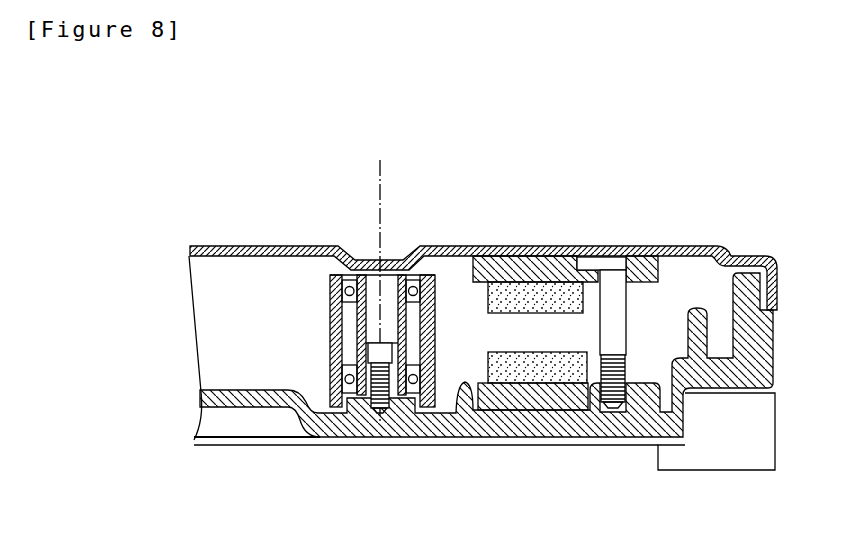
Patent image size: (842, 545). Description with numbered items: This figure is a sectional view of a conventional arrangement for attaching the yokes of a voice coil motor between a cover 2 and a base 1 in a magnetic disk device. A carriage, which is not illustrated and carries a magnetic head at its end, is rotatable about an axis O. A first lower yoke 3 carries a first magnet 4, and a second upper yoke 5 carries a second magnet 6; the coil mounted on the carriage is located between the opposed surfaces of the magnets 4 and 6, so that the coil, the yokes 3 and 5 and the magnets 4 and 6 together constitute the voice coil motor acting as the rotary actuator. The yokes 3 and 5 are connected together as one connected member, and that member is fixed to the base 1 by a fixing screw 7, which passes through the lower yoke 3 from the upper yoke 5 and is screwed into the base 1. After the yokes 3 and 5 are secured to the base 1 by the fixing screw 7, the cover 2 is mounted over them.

The base 1 is at (760, 355).
The cover 2 is at (692, 246).
The first lower yoke 3 is at (515, 420).
The first magnet 4 is at (555, 372).
The second upper yoke 5 is at (497, 258).
The second magnet 6 is at (528, 290).
The fixing screw 7 is at (626, 320).
The axis O is at (376, 179).